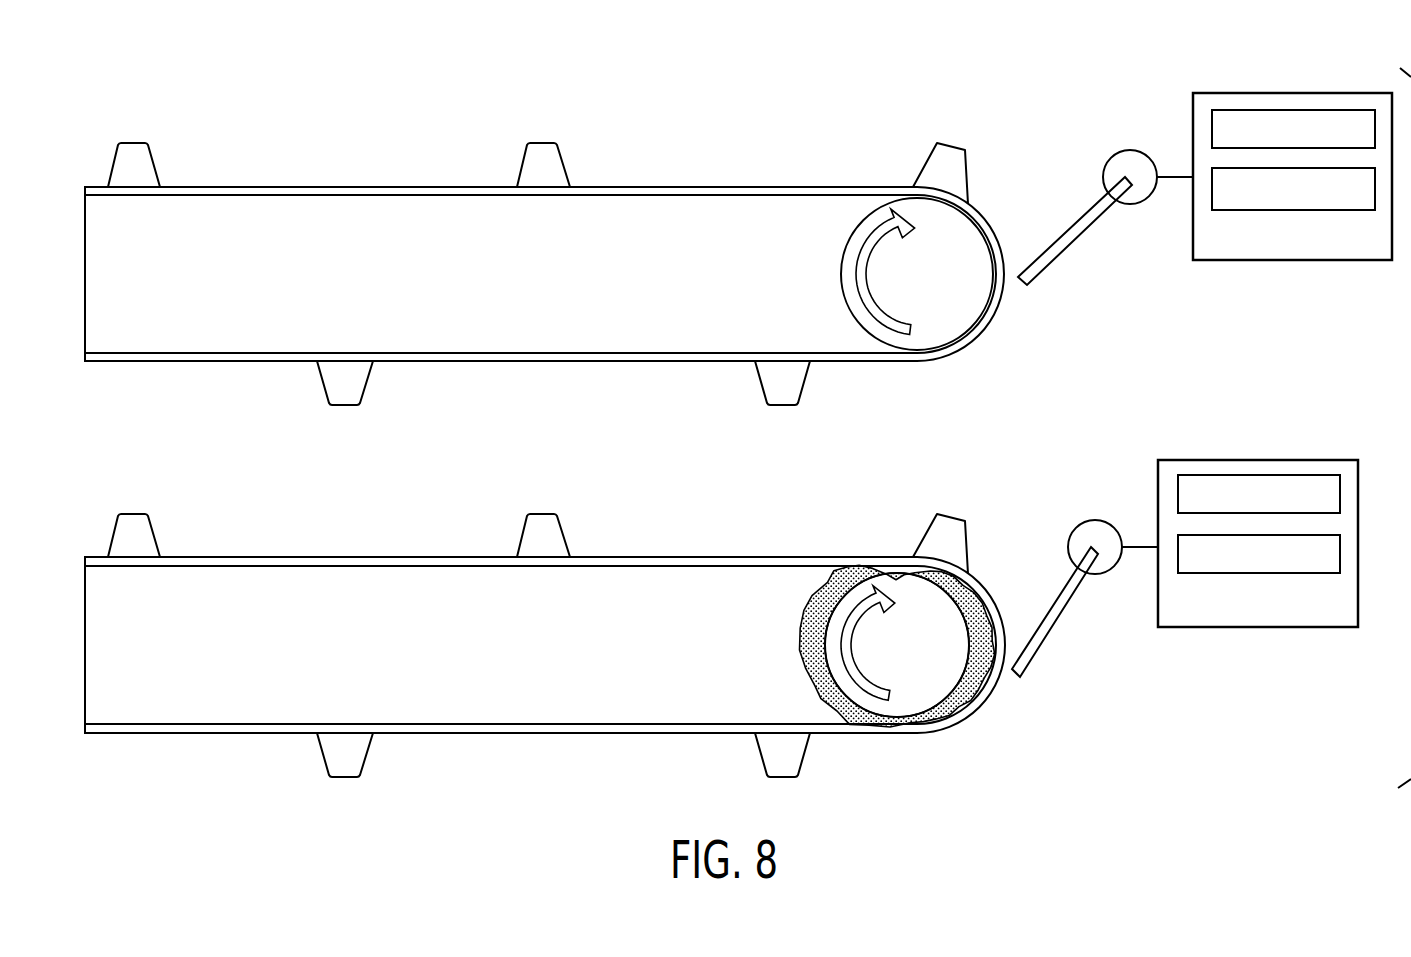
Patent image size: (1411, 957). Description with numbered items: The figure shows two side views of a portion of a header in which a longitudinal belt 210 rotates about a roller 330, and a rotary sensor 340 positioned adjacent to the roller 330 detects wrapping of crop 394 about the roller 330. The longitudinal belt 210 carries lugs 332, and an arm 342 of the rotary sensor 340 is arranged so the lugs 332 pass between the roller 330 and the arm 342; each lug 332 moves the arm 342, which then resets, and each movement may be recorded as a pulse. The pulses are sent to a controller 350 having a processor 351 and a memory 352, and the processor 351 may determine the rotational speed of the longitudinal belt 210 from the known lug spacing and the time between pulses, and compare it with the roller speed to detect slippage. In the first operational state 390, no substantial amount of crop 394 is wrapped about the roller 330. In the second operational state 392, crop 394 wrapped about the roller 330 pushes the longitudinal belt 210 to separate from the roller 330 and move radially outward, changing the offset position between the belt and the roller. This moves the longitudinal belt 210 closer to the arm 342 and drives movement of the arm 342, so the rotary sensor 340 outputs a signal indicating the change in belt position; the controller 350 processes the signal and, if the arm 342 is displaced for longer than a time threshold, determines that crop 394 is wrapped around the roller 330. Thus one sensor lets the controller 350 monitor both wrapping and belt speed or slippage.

The longitudinal belt 210 is at (118, 362).
The roller 330 is at (841, 274).
The lugs 332 is at (345, 405).
The rotary sensor 340 is at (1110, 159).
The arm 342 is at (1070, 246).
The controller 350 is at (1302, 93).
The processor 351 is at (1212, 130).
The memory 352 is at (1212, 195).
The first operational state 390 is at (860, 78).
The second operational state 392 is at (878, 480).
The crop 394 is at (963, 702).